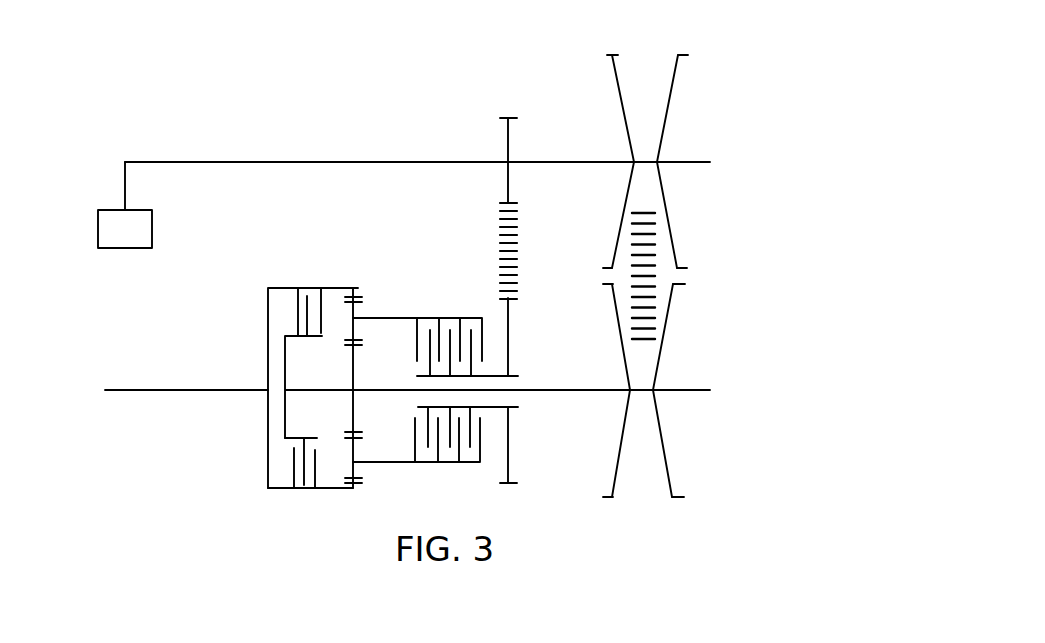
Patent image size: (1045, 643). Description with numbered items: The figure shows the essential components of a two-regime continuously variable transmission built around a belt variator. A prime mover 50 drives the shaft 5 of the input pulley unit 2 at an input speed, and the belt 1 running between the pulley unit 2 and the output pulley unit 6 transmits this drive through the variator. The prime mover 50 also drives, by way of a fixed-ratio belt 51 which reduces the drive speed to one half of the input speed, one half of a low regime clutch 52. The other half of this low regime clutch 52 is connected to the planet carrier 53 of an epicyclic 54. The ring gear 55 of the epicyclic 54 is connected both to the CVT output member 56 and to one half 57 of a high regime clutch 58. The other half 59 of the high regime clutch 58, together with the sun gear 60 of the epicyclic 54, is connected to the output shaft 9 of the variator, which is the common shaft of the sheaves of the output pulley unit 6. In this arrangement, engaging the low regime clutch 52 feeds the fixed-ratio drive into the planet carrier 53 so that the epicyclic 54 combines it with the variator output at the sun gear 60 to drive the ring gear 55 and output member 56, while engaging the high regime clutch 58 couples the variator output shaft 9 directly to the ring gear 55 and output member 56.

The belt 1 is at (640, 258).
The pulley unit 2 is at (682, 111).
The shaft 5 is at (566, 160).
The pulley unit 6 is at (675, 431).
The output shaft 9 is at (568, 388).
The prime mover 50 is at (152, 230).
The fixed-ratio belt 51 is at (512, 243).
The low regime clutch 52 is at (450, 303).
The planet carrier 53 is at (356, 310).
The epicyclic 54 is at (348, 276).
The ring gear 55 is at (332, 491).
The CVT output member 56 is at (163, 388).
The half of high regime clutch 57 is at (294, 472).
The high regime clutch 58 is at (297, 276).
The other half of high regime clutch 59 is at (298, 326).
The sun gear 60 is at (355, 362).